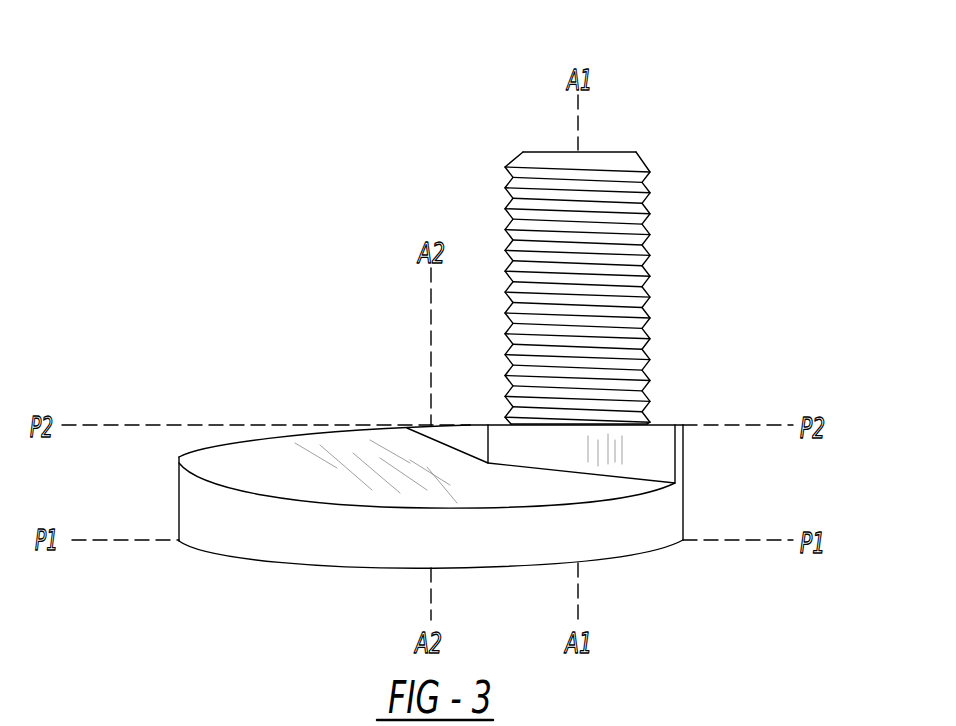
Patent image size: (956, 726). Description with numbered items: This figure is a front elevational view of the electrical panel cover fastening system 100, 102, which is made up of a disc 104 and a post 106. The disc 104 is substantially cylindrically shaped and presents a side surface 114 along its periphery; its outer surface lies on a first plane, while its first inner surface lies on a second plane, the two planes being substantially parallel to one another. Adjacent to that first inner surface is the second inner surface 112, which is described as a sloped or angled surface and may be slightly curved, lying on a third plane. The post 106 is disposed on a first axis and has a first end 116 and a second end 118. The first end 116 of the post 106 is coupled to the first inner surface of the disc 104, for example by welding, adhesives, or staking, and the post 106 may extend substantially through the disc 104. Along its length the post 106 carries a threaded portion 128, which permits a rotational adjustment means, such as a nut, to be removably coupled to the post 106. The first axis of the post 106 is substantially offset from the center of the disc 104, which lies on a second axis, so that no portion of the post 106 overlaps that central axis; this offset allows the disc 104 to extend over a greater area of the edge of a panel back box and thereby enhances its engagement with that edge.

The electrical panel cover fastening system 100 is at (184, 256).
The electrical panel cover fastening system 102 is at (436, 373).
The disc 104 is at (177, 507).
The post 106 is at (655, 159).
The second inner surface 112 is at (289, 456).
The side surface 114 is at (267, 538).
The first end 116 is at (655, 419).
The second end 118 is at (617, 143).
The threaded portion 128 is at (649, 274).